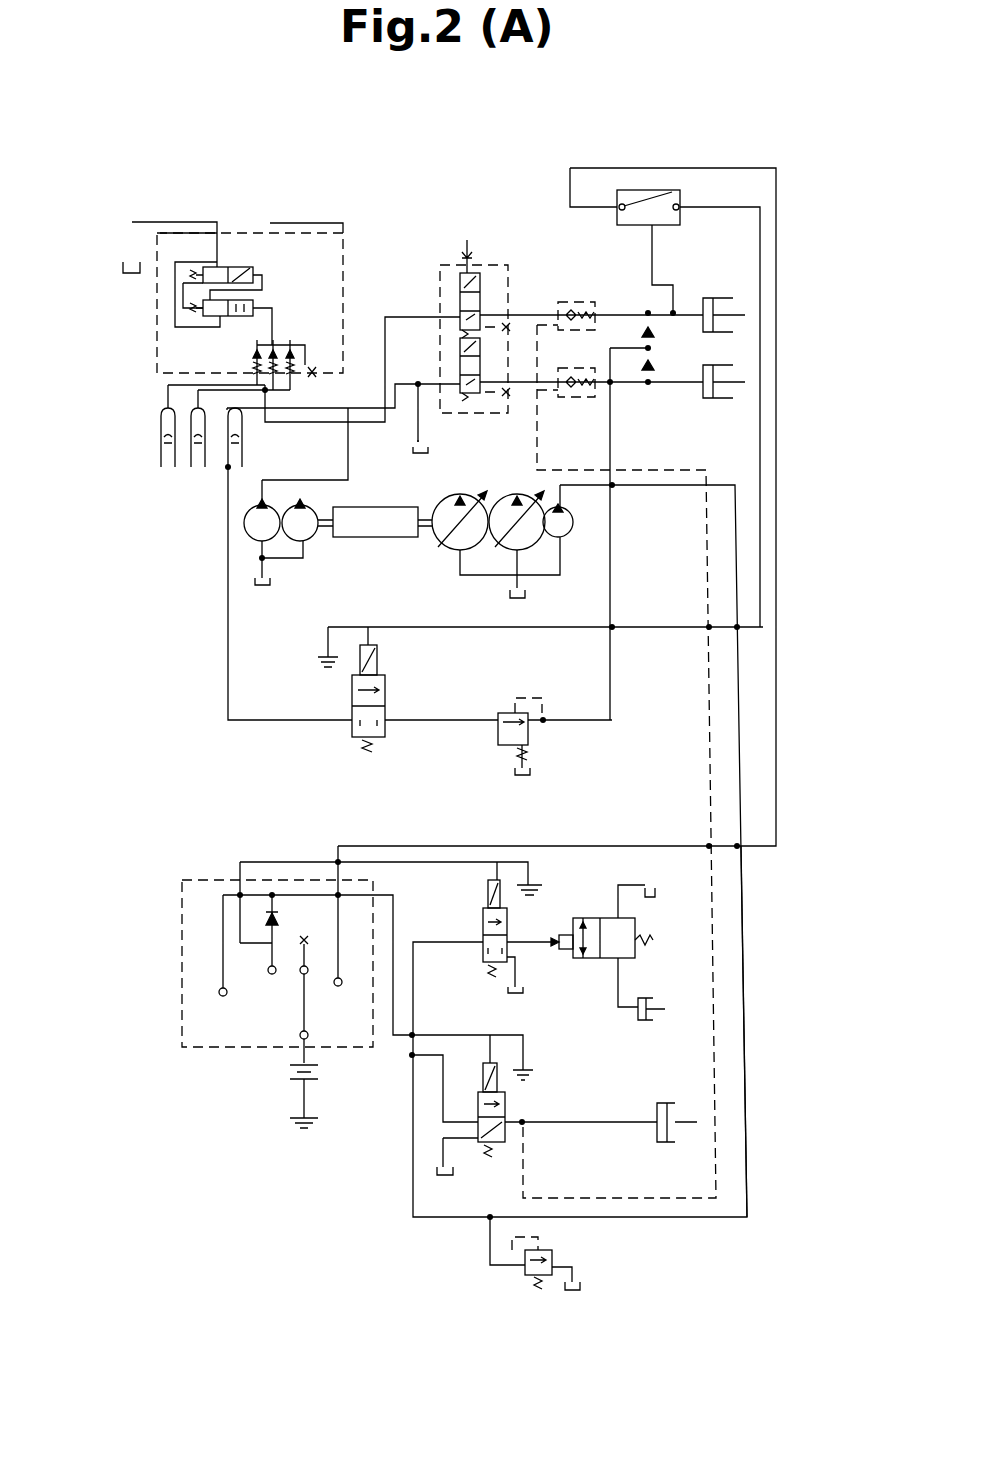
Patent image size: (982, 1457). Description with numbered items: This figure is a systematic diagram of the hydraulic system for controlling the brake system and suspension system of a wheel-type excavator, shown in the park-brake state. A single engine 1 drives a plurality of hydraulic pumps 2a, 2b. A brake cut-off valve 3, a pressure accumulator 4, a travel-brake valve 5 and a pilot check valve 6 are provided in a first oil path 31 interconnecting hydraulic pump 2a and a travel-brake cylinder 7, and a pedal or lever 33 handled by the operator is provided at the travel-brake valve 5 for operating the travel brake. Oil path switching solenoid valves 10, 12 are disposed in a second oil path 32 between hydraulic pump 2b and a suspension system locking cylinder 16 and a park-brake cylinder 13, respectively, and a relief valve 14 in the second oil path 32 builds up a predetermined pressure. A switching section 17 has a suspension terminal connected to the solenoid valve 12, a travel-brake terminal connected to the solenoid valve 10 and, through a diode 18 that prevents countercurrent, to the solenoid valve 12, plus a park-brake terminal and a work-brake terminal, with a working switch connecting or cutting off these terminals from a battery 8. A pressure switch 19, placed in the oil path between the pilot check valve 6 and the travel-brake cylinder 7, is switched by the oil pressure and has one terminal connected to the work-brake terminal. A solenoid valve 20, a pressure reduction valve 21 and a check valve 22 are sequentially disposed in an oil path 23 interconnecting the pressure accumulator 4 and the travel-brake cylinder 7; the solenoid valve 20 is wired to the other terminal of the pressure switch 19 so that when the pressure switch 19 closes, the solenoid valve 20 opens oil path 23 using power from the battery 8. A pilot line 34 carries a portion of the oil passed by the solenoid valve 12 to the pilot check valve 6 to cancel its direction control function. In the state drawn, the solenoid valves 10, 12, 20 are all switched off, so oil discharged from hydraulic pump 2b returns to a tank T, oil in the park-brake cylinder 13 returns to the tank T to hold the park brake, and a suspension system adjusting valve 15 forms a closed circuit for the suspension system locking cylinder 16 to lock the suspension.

The engine 1 is at (398, 537).
The hydraulic pump 2a is at (313, 543).
The hydraulic pump 2b is at (573, 530).
The brake cut-off valve 3 is at (237, 233).
The pressure accumulator 4 is at (168, 437).
The travel-brake valve 5 is at (500, 265).
The pilot check valve 6 is at (562, 302).
The travel-brake cylinder 7 is at (725, 298).
The battery 8 is at (297, 1080).
The solenoid valve 10 is at (483, 953).
The solenoid valve 12 is at (478, 1108).
The park-brake cylinder 13 is at (667, 1143).
The relief valve 14 is at (552, 1260).
The suspension system adjusting valve 15 is at (592, 918).
The suspension system locking cylinder 16 is at (635, 1013).
The switching section 17 is at (182, 905).
The diode 18 is at (272, 914).
The pressure switch 19 is at (655, 190).
The solenoid valve 20 is at (385, 697).
The pressure reduction valve 21 is at (498, 730).
The check valve 22 is at (648, 348).
The oil path 23 is at (228, 597).
The first oil path 31 is at (427, 468).
The second oil path 32 is at (748, 972).
The lever 33 is at (467, 240).
The pilot line 34 is at (717, 1083).
The tank T is at (572, 1290).